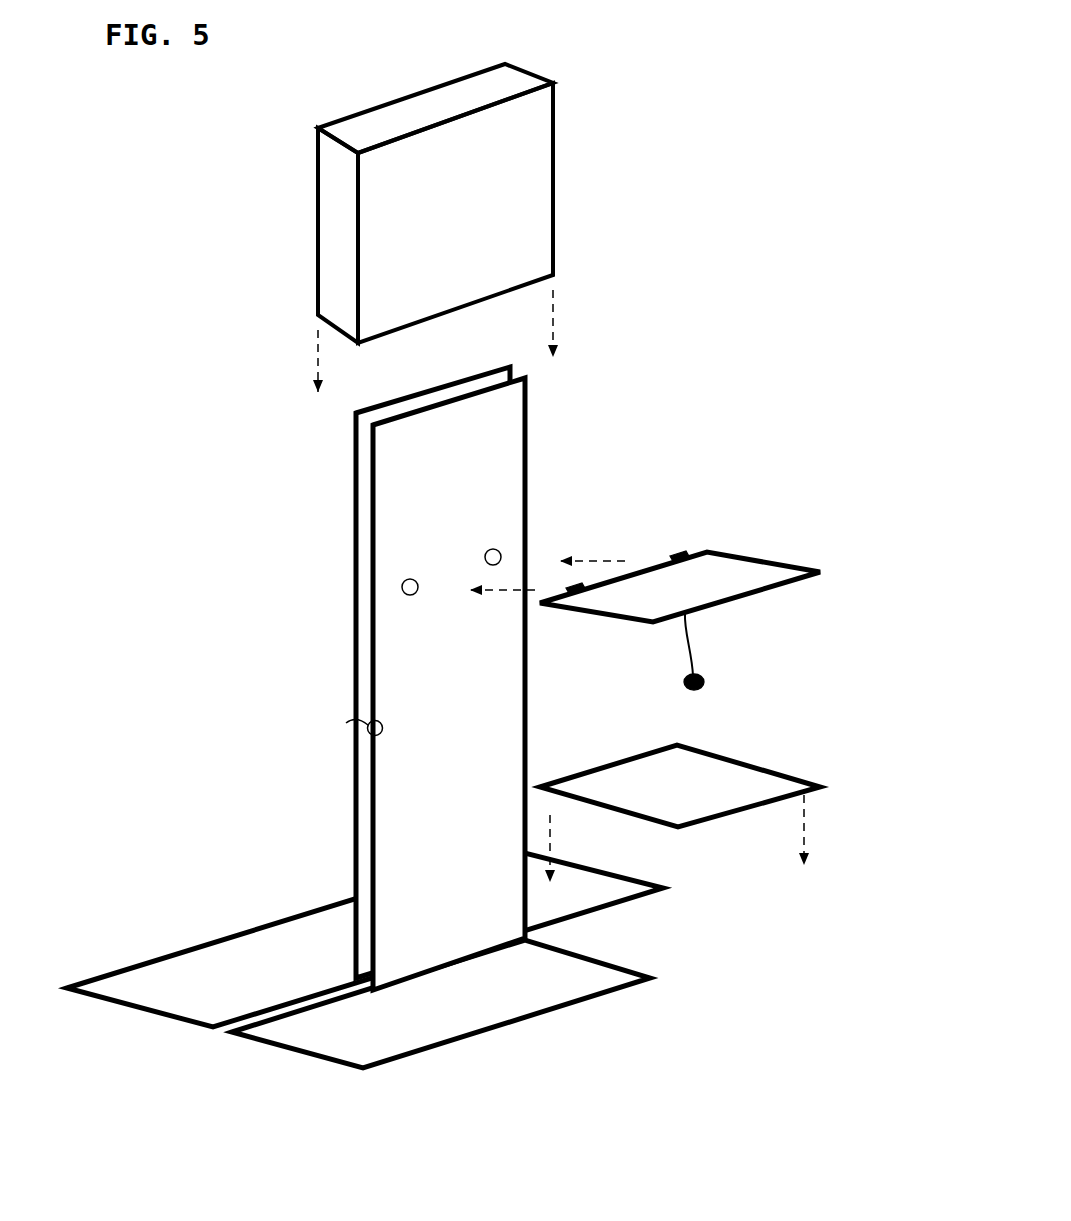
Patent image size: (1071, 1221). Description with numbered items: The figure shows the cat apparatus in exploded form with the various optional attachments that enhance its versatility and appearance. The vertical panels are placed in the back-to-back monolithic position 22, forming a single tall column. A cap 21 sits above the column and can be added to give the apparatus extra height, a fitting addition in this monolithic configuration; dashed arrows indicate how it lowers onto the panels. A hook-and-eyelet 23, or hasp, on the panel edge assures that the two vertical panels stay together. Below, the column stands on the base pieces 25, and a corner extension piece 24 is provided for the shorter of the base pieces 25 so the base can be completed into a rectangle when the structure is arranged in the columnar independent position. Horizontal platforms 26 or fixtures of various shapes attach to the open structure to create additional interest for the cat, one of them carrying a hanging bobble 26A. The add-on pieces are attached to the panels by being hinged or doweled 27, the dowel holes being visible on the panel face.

The cap 21 is at (322, 263).
The back-to-back monolithic position 22 is at (408, 513).
The hook-and-eyelet 23 is at (335, 708).
The corner extension piece 24 is at (647, 772).
The base pieces 25 is at (617, 965).
The horizontal platforms 26 is at (688, 575).
The bobble 26A is at (718, 681).
The dowel 27 is at (424, 582).